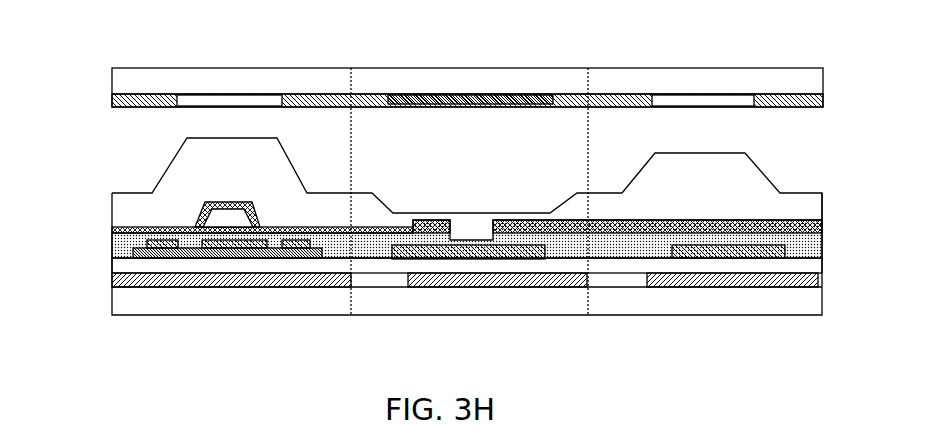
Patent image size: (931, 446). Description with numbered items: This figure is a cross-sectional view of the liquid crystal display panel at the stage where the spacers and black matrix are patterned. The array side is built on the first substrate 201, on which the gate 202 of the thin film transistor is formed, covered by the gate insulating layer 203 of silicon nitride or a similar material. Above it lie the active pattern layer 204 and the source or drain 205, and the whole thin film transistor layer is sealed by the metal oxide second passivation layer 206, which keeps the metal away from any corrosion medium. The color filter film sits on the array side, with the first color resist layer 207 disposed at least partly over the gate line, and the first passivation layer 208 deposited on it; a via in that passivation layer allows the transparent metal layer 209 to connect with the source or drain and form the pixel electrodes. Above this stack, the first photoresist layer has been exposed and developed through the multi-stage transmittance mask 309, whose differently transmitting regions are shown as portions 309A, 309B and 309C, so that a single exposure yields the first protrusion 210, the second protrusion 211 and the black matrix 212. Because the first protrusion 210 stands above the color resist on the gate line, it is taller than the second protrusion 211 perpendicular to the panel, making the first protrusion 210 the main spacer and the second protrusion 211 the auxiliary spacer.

The first substrate 201 is at (123, 305).
The gate 202 is at (250, 277).
The gate insulating layer 203 is at (125, 267).
The active pattern layer 204 is at (123, 245).
The source or drain 205 is at (467, 228).
The second passivation layer 206 is at (112, 238).
The first color resist layer 207 is at (222, 201).
The first passivation layer 208 is at (120, 232).
The transparent metal layer 209 is at (484, 200).
The first protrusion 210 is at (367, 175).
The second protrusion 211 is at (714, 179).
The black matrix 212 is at (574, 176).
The multi-stage transmittance mask 309 is at (127, 85).
The transparent region 309A is at (230, 102).
The black matrix 309B is at (607, 97).
The color filter 309C is at (470, 69).